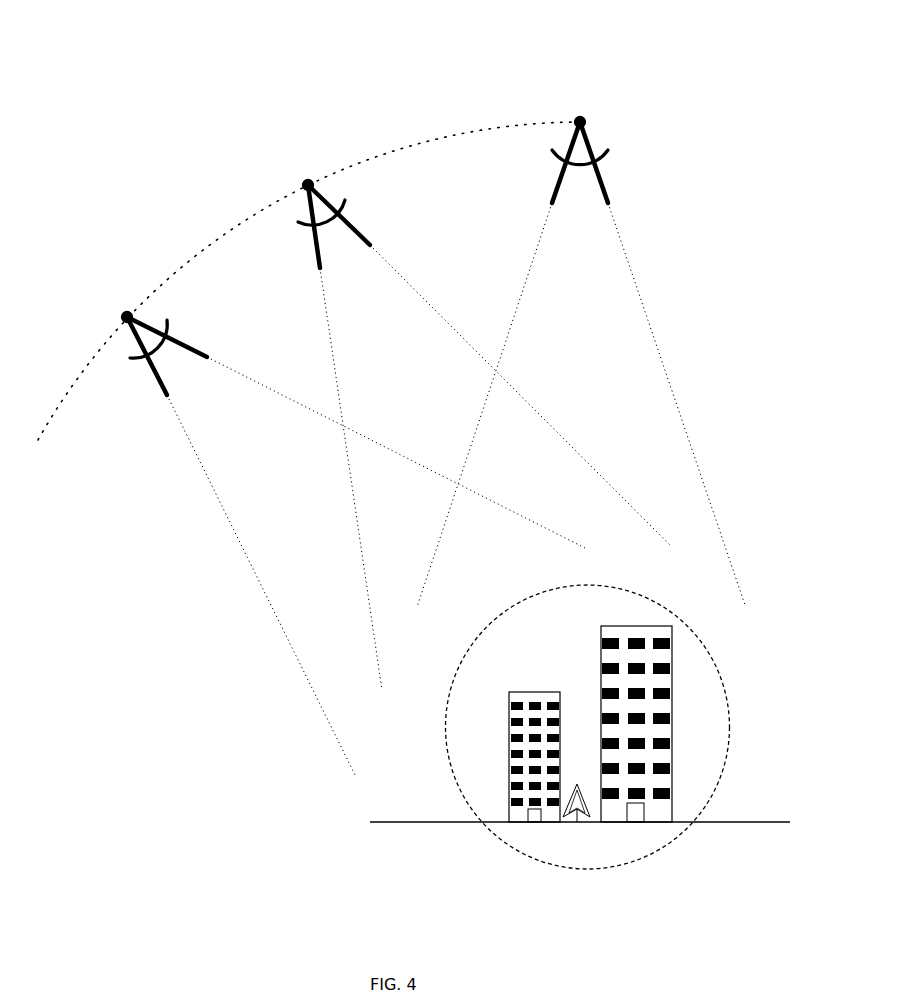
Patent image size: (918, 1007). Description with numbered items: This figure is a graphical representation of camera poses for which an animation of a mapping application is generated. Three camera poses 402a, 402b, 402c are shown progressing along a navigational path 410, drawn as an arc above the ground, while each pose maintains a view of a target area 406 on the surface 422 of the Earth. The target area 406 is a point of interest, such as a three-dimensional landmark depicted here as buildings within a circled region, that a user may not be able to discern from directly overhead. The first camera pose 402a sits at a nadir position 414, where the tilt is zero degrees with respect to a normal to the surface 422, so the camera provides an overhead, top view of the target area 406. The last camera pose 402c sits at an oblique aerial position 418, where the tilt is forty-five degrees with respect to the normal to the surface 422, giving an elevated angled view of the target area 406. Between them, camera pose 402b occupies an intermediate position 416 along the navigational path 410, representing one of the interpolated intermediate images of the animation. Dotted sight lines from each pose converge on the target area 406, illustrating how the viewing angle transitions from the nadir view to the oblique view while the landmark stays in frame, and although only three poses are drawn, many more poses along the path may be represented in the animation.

The navigational path 410 is at (413, 147).
The camera pose 402a is at (587, 142).
The camera pose 402b is at (324, 198).
The camera pose 402c is at (147, 328).
The nadir position 414 is at (578, 119).
The intermediate position 416 is at (305, 182).
The oblique aerial position 418 is at (125, 316).
The target area 406 is at (719, 673).
The surface of the Earth 422 is at (411, 821).